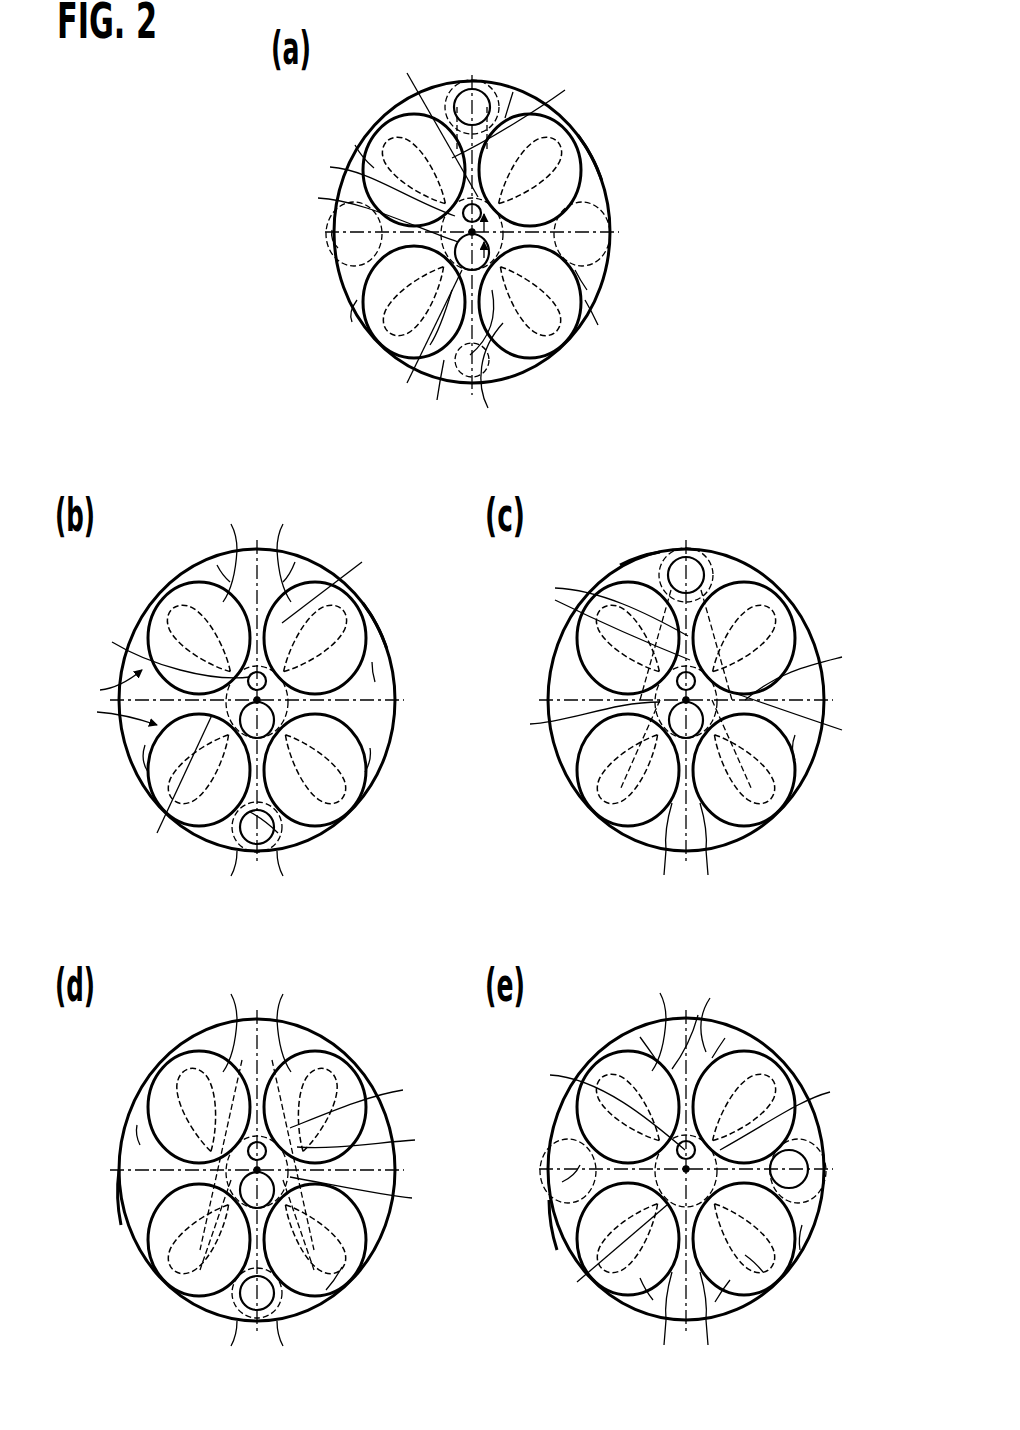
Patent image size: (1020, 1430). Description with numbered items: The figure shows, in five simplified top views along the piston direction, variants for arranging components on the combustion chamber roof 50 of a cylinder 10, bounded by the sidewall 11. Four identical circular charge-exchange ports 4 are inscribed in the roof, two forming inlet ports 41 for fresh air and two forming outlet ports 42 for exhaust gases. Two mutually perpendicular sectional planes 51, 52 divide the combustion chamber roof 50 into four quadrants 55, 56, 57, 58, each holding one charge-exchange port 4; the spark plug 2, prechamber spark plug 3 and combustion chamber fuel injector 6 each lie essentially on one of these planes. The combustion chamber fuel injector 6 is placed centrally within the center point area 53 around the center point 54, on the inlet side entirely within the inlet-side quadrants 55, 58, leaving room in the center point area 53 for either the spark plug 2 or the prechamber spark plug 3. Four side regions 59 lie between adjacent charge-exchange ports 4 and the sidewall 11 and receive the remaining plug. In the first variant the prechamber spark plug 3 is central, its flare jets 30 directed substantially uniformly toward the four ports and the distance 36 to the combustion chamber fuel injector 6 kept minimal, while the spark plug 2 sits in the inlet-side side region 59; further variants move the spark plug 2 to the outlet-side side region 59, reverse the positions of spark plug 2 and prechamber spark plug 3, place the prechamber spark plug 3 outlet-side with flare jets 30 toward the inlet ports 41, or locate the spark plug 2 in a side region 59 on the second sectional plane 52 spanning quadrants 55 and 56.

The spark plug 2 is at (455, 90).
The prechamber spark plug 3 is at (603, 257).
The charge-exchange port 4 is at (590, 190).
The combustion chamber fuel injector 6 is at (556, 599).
The cylinder 10 is at (544, 85).
The sidewall 11 is at (599, 163).
The flare jets 30 is at (398, 118).
The distance 36 is at (419, 346).
The inlet port 41 is at (660, 1045).
The outlet port 42 is at (370, 1300).
The combustion chamber roof 50 is at (587, 290).
The first sectional plane 51 is at (607, 687).
The second sectional plane 52 is at (338, 248).
The center point area 53 is at (495, 699).
The center point 54 is at (476, 733).
The first inlet-side quadrant 55 is at (511, 92).
The first outlet-side quadrant 56 is at (743, 1325).
The second outlet-side quadrant 57 is at (352, 322).
The second inlet-side quadrant 58 is at (355, 145).
The side region 59 is at (500, 85).